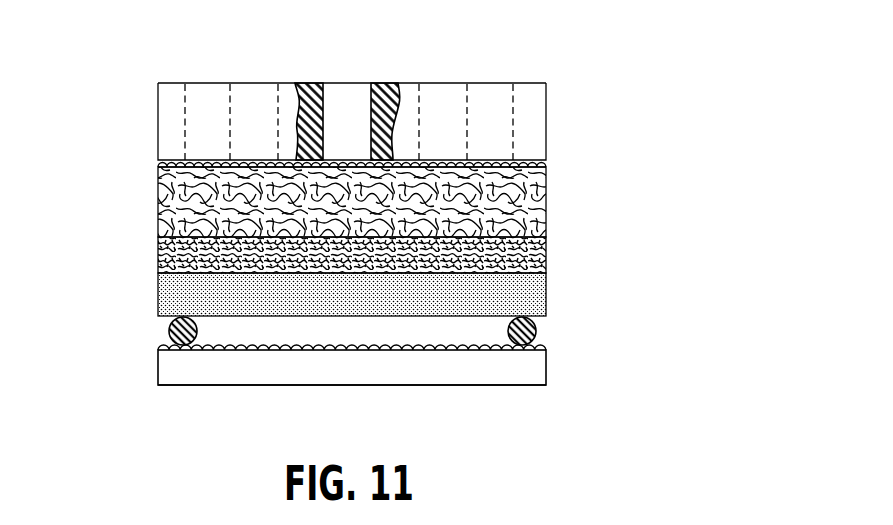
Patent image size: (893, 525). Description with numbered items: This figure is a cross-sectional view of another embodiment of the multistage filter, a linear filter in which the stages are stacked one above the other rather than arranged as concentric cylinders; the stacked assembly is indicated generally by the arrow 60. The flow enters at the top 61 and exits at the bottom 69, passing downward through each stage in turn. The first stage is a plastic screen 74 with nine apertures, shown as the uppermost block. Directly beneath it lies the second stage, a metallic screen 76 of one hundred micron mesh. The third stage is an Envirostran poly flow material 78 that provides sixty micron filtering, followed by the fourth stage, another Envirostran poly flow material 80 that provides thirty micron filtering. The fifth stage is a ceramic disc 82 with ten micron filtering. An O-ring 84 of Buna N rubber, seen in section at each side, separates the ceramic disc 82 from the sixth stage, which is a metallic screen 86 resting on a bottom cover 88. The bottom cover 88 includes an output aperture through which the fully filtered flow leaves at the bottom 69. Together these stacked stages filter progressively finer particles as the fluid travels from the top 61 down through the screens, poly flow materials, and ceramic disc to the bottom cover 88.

The display assembly 60 is at (340, 160).
The top 61 is at (437, 83).
The bottom 69 is at (255, 385).
The plastic screen 74 is at (534, 100).
The metallic screen 76 is at (551, 167).
The Envirostran poly flow material 78 is at (547, 198).
The Envirostran poly flow material 80 is at (547, 255).
The ceramic disc 82 is at (527, 290).
The O-ring 84 is at (535, 325).
The metallic screen 86 is at (465, 340).
The bottom cover 88 is at (458, 368).